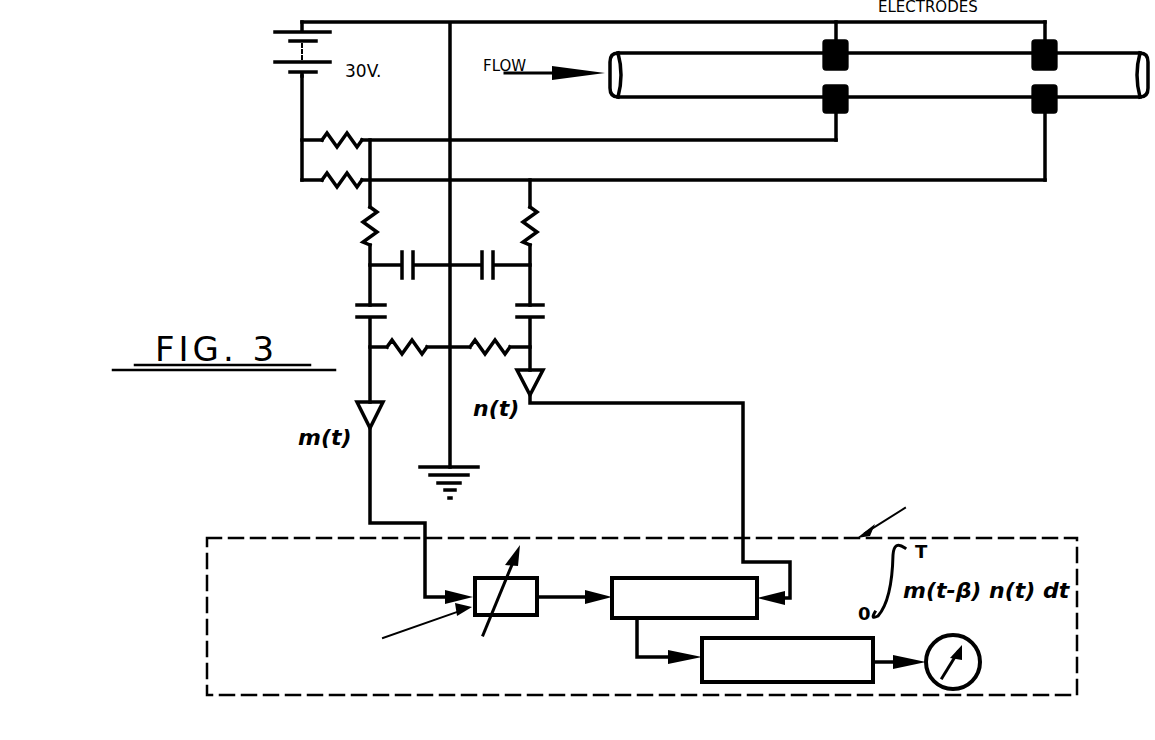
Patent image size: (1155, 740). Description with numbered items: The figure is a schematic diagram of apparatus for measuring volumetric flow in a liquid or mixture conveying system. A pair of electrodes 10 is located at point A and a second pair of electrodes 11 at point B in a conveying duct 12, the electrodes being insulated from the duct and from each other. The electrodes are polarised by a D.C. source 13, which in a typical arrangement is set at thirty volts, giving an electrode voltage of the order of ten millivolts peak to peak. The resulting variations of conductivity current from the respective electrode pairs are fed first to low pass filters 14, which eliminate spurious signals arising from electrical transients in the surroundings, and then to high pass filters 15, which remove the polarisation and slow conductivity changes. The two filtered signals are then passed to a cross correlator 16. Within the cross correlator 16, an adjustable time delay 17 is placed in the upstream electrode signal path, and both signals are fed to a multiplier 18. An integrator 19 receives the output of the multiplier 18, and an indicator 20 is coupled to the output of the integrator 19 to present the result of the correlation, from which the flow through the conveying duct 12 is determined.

The pair of electrodes at point A 10 is at (848, 62).
The pair of electrodes at point B 11 is at (1032, 62).
The conveying duct 12 is at (1083, 100).
The D.C. source 13 is at (297, 50).
The low pass filters 14 is at (524, 222).
The high pass filters 15 is at (523, 353).
The cross correlator 16 is at (1078, 643).
The adjustable time delay 17 is at (522, 598).
The multiplier 18 is at (700, 578).
The integrator 19 is at (800, 650).
The indicator 20 is at (980, 645).